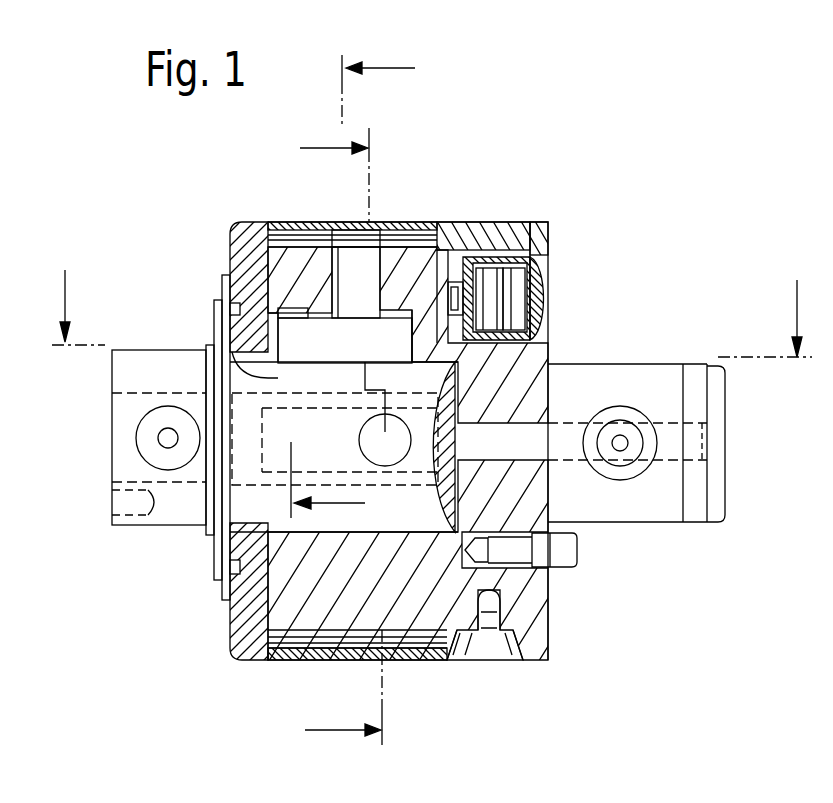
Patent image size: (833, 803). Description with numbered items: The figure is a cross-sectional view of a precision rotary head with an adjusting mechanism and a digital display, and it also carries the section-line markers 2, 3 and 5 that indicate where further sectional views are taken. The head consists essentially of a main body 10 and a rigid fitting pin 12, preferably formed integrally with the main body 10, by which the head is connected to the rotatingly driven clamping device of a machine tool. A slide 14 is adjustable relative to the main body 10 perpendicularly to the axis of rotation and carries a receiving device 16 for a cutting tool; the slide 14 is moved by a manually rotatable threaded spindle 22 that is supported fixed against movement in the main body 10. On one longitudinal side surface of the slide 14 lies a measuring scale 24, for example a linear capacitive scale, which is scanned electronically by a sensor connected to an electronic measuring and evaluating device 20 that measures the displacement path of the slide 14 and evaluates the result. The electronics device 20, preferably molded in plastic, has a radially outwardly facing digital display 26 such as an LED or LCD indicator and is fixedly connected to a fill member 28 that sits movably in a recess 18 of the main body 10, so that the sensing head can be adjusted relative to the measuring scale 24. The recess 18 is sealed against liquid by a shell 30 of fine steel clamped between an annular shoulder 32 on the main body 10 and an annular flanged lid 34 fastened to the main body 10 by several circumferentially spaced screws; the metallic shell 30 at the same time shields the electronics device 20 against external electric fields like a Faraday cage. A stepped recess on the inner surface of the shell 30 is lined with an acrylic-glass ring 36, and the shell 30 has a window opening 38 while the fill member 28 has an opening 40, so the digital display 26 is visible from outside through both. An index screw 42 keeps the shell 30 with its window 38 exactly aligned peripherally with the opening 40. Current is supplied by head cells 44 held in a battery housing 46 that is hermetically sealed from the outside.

The main body 10 is at (517, 600).
The rigid fitting pin 12 is at (608, 493).
The slide 14 is at (218, 548).
The receiving device 16 is at (131, 530).
The recess 18 is at (412, 265).
The electronic measuring and evaluating device 20 is at (230, 272).
The threaded spindle 22 is at (388, 443).
The measuring scale 24 is at (212, 343).
The digital display 26 is at (330, 227).
The fill member 28 is at (233, 225).
The shell 30 is at (512, 223).
The annular shoulder 32 is at (550, 236).
The annular flanged lid 34 is at (227, 637).
The acrylic-glass ring 36 is at (273, 663).
The window opening 38 is at (373, 223).
The opening 40 is at (374, 293).
The index screw 42 is at (500, 660).
The head cells 44 is at (517, 297).
The battery housing 46 is at (550, 330).
The section line 2- 2 is at (325, 436).
The section line 3- 3 is at (431, 303).
The section line 5- 5 is at (367, 290).